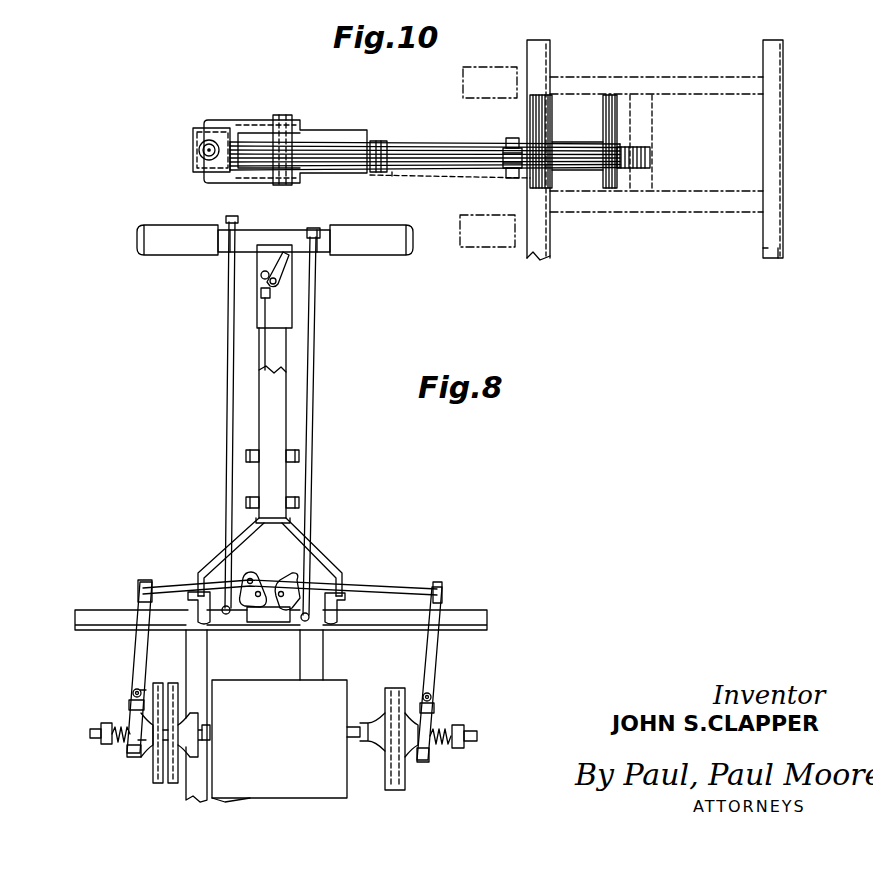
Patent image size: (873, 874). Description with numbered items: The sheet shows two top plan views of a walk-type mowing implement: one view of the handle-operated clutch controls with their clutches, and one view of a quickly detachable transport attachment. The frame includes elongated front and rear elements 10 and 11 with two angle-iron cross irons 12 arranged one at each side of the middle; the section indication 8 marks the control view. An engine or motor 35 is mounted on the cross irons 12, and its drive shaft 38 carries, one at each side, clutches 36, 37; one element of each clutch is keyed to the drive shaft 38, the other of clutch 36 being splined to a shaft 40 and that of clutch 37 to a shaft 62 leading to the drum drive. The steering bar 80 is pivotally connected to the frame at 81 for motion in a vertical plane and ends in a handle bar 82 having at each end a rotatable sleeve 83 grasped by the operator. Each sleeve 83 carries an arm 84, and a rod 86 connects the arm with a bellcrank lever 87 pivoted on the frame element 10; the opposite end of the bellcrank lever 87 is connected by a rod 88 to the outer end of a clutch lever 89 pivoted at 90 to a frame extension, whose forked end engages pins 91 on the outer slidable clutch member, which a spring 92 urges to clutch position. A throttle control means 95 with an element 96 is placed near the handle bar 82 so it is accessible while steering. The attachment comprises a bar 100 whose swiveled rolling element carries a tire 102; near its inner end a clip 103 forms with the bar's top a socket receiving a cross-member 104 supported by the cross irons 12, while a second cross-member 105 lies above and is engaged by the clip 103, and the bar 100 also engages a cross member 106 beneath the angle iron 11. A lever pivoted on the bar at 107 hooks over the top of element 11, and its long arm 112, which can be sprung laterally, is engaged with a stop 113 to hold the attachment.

In FIG. 10, the section line of FIG. 8 is at (478, 68).
In FIG. 10, the front frame element 10 is at (763, 228).
In FIG. 8, the front frame element 10 is at (472, 620).
In FIG. 10, the rear frame element 11 is at (548, 52).
In FIG. 10, the cross irons 12 is at (692, 75).
In FIG. 8, the cross irons 12 is at (193, 662).
In FIG. 8, the engine or motor 35 is at (279, 741).
In FIG. 8, the clutch 36 is at (157, 783).
In FIG. 8, the clutch 37 is at (383, 790).
In FIG. 8, the drive shaft 38 is at (204, 735).
In FIG. 8, the shaft 40 is at (90, 738).
In FIG. 8, the shaft 62 is at (477, 736).
In FIG. 8, the steering bar 80 is at (279, 413).
In FIG. 8, the pivotal connection 81 is at (152, 590).
In FIG. 8, the handle bar 82 is at (284, 235).
In FIG. 8, the sleeve 83 is at (163, 233).
In FIG. 8, the arm 84 is at (237, 217).
In FIG. 8, the rod 86 is at (226, 352).
In FIG. 8, the bellcrank lever 87 is at (240, 608).
In FIG. 8, the rod 88 is at (238, 580).
In FIG. 8, the clutch lever 89 is at (138, 646).
In FIG. 8, the pivot 90 is at (132, 691).
In FIG. 8, the pins 91 is at (135, 742).
In FIG. 8, the spring 92 is at (118, 720).
In FIG. 8, the throttle control means 95 is at (262, 315).
In FIG. 8, the throttle control element 96 is at (282, 268).
In FIG. 10, the bar 100 is at (435, 152).
In FIG. 10, the tire 102 is at (327, 135).
In FIG. 10, the clip 103 is at (640, 156).
In FIG. 10, the cross-member 104 is at (653, 128).
In FIG. 10, the second cross-member 105 is at (609, 188).
In FIG. 10, the cross member 106 is at (546, 121).
In FIG. 10, the lever pivot 107 is at (510, 182).
In FIG. 10, the long arm 112 is at (398, 174).
In FIG. 10, the stop 113 is at (380, 178).